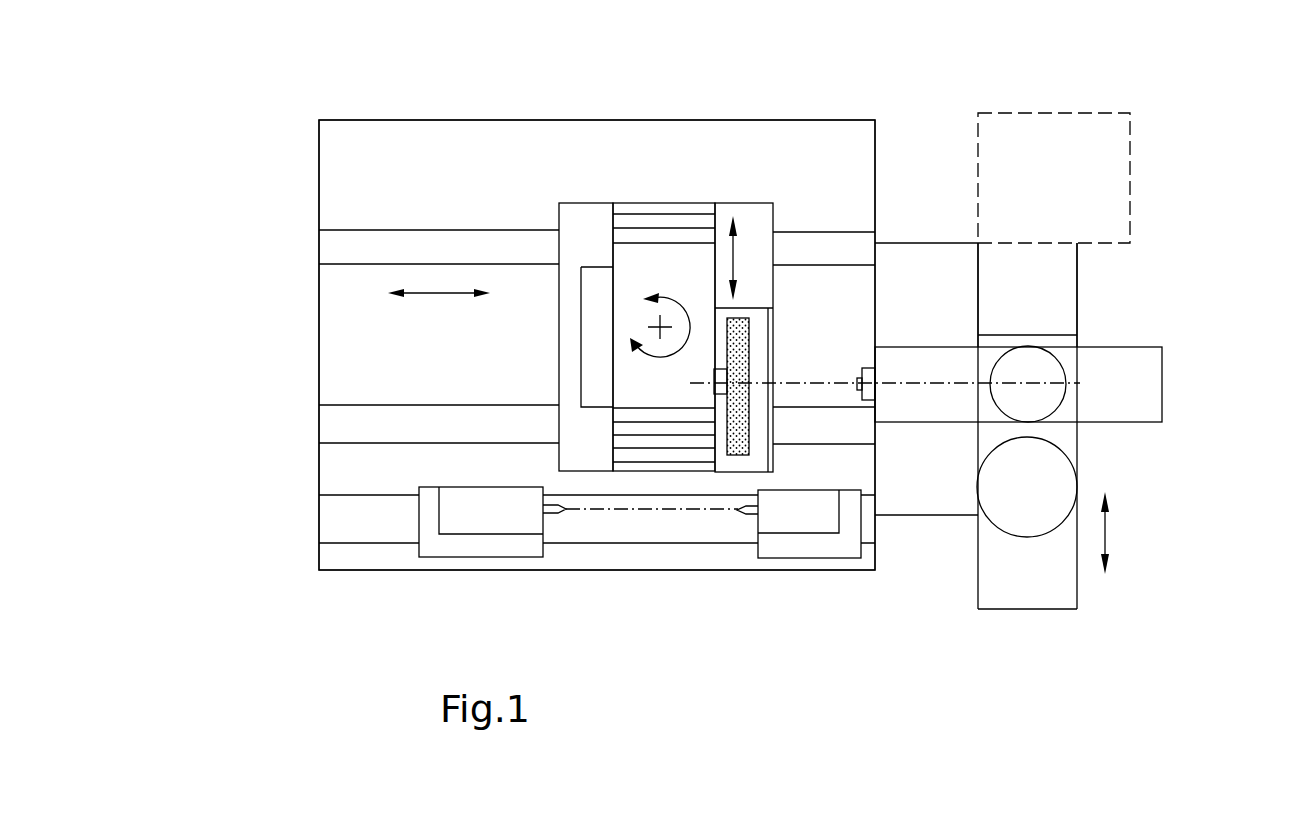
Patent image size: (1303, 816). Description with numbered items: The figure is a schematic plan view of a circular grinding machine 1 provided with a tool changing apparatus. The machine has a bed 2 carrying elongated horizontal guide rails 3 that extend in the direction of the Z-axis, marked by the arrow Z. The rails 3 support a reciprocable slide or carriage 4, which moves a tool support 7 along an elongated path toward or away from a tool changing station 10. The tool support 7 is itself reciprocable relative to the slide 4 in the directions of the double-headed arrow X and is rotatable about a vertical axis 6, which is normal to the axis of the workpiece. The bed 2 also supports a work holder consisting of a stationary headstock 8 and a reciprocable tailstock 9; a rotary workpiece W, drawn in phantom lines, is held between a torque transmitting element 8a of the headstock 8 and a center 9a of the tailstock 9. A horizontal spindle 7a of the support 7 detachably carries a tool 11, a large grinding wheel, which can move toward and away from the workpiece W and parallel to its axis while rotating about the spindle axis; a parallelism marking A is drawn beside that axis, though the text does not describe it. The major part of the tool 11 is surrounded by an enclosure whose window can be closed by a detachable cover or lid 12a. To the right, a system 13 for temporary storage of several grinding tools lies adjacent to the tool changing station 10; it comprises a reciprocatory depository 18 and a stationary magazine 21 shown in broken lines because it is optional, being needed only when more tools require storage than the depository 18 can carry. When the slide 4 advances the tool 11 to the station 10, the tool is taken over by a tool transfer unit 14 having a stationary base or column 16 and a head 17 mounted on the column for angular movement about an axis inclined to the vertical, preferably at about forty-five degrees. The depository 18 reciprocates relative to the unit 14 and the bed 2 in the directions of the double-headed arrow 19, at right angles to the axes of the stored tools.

The circular grinding machine 1 is at (778, 108).
The bed 2 is at (438, 132).
The guide rails 3 is at (330, 246).
The slide 4 is at (580, 220).
The vertical axis 6 is at (655, 325).
The tool support 7 is at (655, 258).
The spindle 7a is at (724, 376).
The headstock 8 is at (472, 545).
The torque transmitting element 8a is at (553, 513).
The tailstock 9 is at (808, 548).
The center 9a is at (748, 515).
The tool changing station 10 is at (898, 436).
The tool 11 is at (740, 330).
The lid 12a is at (770, 362).
The system for temporary storage 13 is at (953, 148).
The tool transfer unit 14 is at (1180, 365).
The stationary base 16 is at (938, 497).
The head 17 is at (1145, 410).
The depository 18 is at (1063, 595).
The double-headed arrow 19 is at (1108, 535).
The magazine 21 is at (1118, 190).
The workpiece W is at (663, 510).
The double-headed arrow X is at (745, 258).
The Z-axis Z is at (439, 310).
The axis A is at (800, 385).